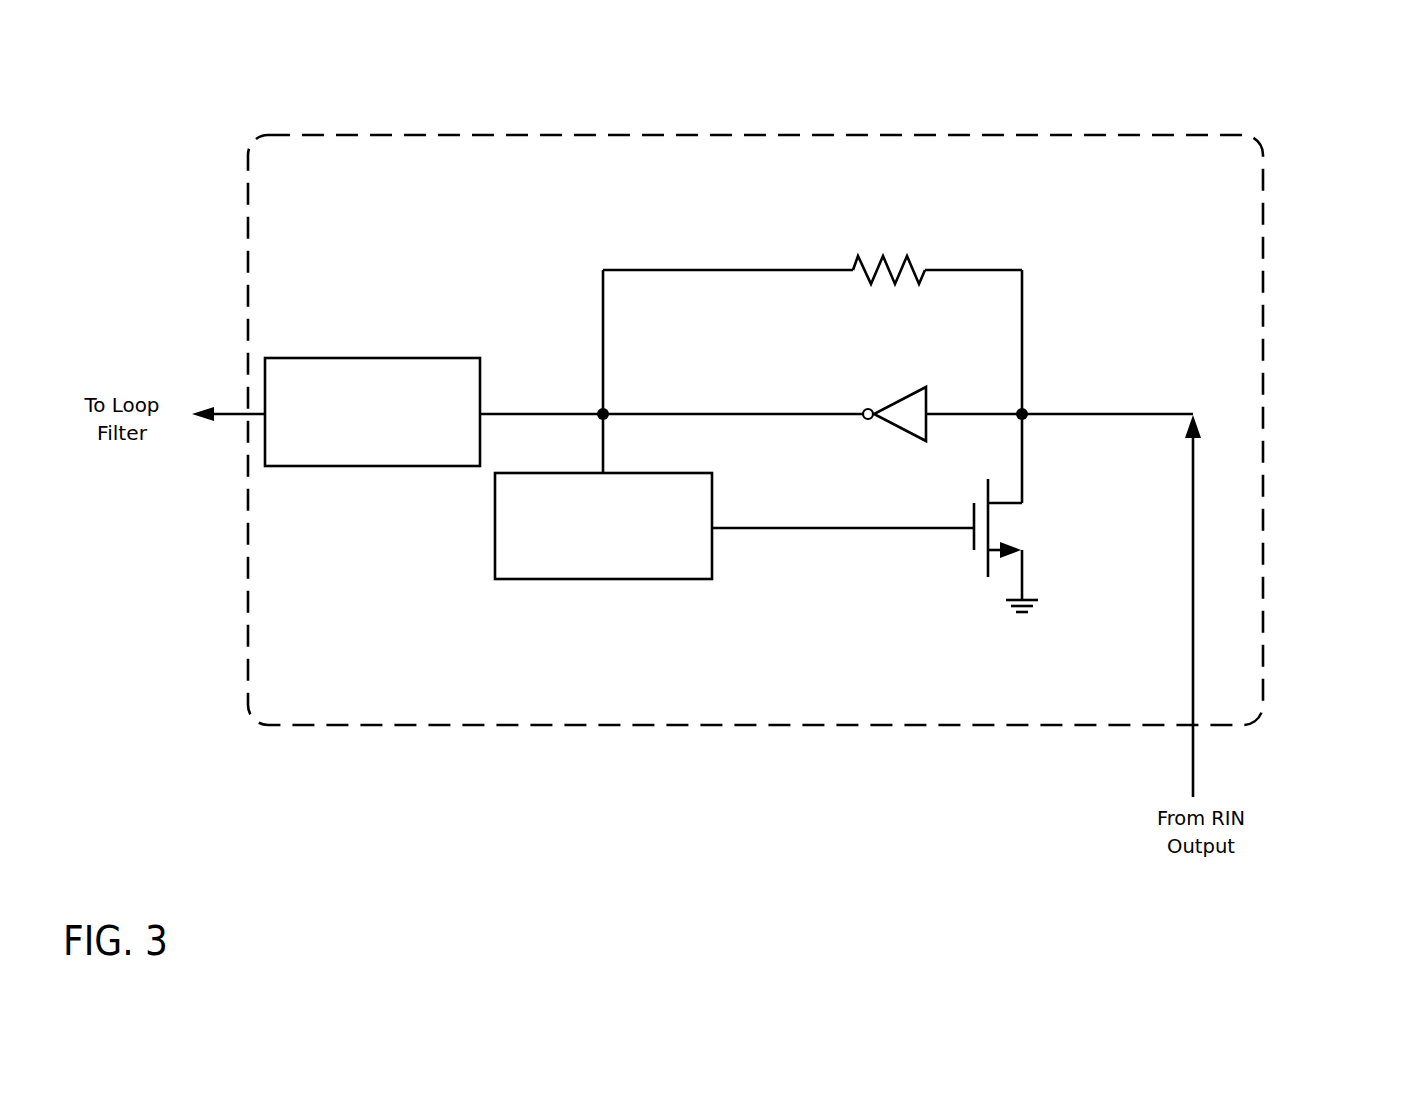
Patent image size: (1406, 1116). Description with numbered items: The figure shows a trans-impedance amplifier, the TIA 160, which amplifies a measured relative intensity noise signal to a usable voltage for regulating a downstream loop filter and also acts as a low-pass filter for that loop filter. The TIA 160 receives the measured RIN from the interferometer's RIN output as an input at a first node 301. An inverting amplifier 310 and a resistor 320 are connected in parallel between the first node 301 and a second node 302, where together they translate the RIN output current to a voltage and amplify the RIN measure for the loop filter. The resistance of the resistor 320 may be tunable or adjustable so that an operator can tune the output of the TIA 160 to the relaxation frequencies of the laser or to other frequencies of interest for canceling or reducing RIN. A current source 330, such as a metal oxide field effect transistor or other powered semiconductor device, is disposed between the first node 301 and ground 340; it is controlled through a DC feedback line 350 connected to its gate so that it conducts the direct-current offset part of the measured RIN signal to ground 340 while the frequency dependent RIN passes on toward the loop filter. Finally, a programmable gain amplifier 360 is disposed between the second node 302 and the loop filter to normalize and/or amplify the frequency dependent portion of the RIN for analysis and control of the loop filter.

The TIA 160 is at (1290, 126).
The first node 301 is at (1030, 407).
The second node 302 is at (597, 408).
The inverting amplifier 310 is at (930, 402).
The resistor 320 is at (917, 265).
The current source 330 is at (987, 565).
The ground 340 is at (1013, 610).
The DC feedback line 350 is at (603, 526).
The programmable gain amplifier 360 is at (372, 412).